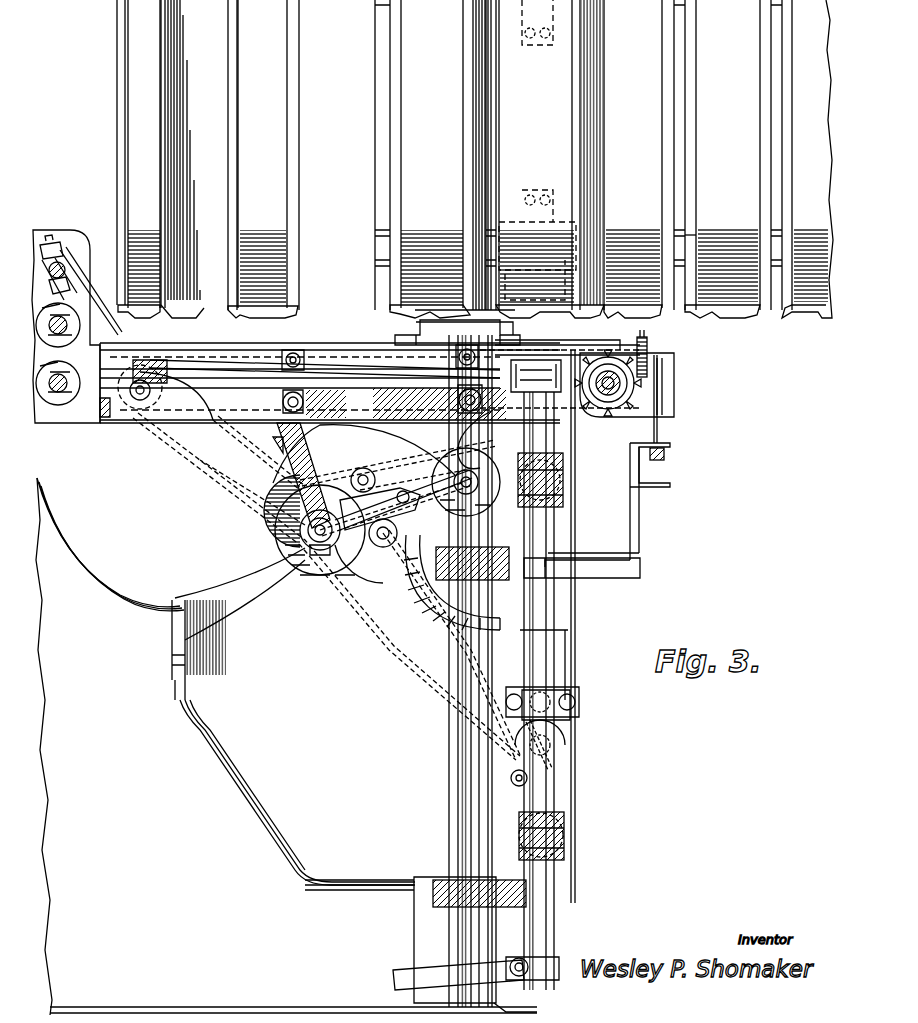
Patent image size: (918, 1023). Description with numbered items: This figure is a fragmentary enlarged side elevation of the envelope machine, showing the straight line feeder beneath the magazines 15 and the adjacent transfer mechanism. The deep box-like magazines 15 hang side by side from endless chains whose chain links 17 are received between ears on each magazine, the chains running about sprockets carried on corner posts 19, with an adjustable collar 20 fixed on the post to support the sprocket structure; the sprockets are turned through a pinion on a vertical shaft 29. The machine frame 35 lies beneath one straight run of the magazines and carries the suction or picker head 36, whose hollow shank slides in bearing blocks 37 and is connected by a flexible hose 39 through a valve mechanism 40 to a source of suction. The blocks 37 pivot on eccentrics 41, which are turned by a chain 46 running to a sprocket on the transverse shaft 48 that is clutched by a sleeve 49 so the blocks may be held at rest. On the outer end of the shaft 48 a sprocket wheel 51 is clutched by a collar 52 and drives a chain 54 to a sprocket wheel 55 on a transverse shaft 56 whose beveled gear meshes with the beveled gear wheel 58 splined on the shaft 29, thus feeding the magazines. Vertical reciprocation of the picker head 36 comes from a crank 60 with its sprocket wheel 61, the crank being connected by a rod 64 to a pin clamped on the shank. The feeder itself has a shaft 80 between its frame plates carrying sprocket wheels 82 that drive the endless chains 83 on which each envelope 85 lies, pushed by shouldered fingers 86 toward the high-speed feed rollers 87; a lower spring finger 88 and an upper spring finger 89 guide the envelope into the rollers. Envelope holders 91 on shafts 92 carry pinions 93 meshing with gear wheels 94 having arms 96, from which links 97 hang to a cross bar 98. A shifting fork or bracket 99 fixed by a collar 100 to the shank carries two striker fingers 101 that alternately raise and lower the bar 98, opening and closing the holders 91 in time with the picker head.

The magazine 15 is at (400, 166).
The chain link 17 is at (680, 228).
The post 19 is at (455, 808).
The adjustable collar 20 is at (513, 330).
The vertical shaft 29 is at (415, 339).
The frame 35 is at (568, 600).
The suction or picker head 36 is at (536, 376).
The bearing block 37 is at (560, 500).
The flexible hose 39 is at (428, 605).
The valve mechanism 40 is at (406, 578).
The eccentric 41 is at (563, 488).
The chain 46 is at (345, 470).
The transverse shaft 48 is at (303, 549).
The sleeve 49 is at (440, 690).
The sprocket wheel 51 is at (310, 565).
The sleeve or collar 52 is at (295, 520).
The chain 54 is at (364, 471).
The sprocket wheel 55 is at (470, 478).
The transverse shaft 56 is at (445, 475).
The beveled gear wheel 58 is at (500, 515).
The crank 60 is at (565, 780).
The sprocket wheel 61 is at (560, 748).
The rod 64 is at (515, 765).
The shaft 80 is at (635, 390).
The sprocket wheel 82 is at (140, 410).
The endless chain 83 is at (575, 420).
The envelope 85 is at (110, 335).
The abutment or finger 86 is at (598, 425).
The feed roller 87 is at (88, 300).
The lower spring finger 88 is at (230, 380).
The upper spring finger 89 is at (84, 330).
The envelope holder 91 is at (570, 348).
The shaft 92 is at (620, 355).
The pinion 93 is at (646, 350).
The gear wheel 94 is at (638, 350).
The arm 96 is at (662, 345).
The link 97 is at (660, 433).
The cross bar or tie-rod 98 is at (684, 470).
The shifting fork or bracket 99 is at (640, 544).
The collar 100 is at (590, 572).
The striker finger 101 is at (672, 478).